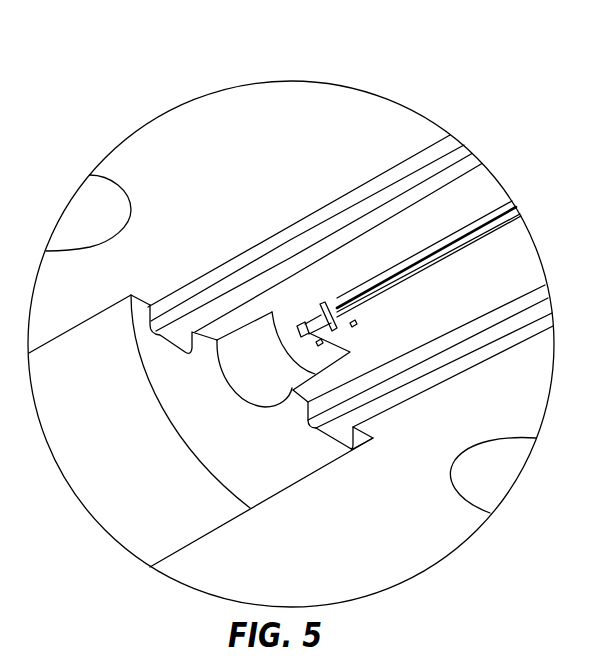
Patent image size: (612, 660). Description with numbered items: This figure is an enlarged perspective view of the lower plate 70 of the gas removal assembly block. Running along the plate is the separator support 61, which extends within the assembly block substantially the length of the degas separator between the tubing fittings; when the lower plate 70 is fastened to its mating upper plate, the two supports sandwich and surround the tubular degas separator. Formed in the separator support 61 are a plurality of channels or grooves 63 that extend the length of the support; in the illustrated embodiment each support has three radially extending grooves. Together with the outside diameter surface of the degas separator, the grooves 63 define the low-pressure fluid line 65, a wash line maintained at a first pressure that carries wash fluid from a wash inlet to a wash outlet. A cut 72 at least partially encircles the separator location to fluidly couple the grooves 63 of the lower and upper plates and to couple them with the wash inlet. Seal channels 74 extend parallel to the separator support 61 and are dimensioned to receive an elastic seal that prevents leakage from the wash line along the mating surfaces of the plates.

The lower plate 70 is at (281, 123).
The separator support 61 is at (483, 213).
The grooves 63 is at (300, 365).
The low-pressure fluid line 65 is at (301, 324).
The cut 72 is at (322, 303).
The seal channels 74 is at (160, 337).